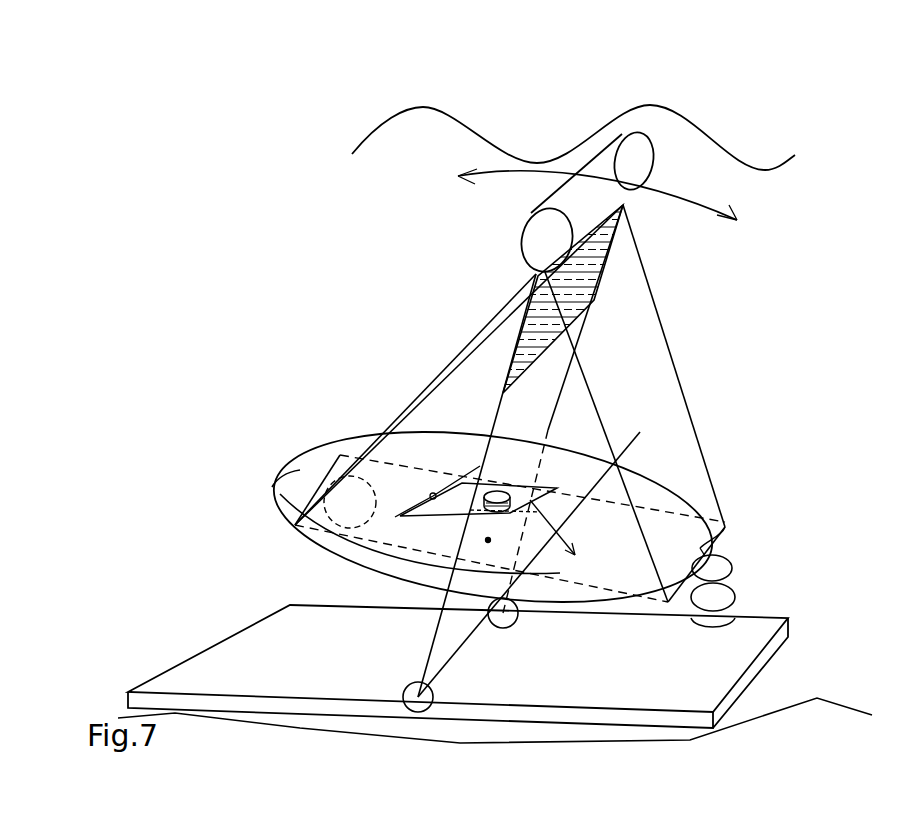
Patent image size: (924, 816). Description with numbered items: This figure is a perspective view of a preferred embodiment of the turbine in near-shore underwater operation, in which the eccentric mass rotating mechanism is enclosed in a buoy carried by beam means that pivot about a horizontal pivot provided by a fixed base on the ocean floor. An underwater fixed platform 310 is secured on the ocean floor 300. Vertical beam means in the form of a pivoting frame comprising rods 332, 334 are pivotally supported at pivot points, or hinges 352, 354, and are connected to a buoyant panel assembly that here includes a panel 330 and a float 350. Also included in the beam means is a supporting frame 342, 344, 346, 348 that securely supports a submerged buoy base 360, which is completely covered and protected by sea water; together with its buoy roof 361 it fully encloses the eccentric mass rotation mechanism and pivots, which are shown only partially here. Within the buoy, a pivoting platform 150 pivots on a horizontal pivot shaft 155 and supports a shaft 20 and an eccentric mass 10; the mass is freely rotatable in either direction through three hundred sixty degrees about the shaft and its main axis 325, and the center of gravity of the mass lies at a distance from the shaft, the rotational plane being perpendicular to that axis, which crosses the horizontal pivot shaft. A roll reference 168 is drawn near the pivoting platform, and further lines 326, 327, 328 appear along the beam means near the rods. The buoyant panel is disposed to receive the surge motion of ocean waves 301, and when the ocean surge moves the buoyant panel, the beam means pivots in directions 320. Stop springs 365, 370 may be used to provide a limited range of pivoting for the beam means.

The ocean waves 301 is at (716, 142).
The pivoting directions 320 is at (736, 212).
The float 350 is at (524, 231).
The panel 330 is at (572, 298).
The rod 334 is at (578, 355).
The main axis 325 is at (671, 353).
The beam edge line 326 is at (596, 402).
The beam edge line 327 is at (434, 390).
The rod 332 is at (500, 405).
The beam line 328 is at (433, 388).
The buoy roof 361 is at (602, 455).
The submerged buoy base 360 is at (282, 490).
The supporting frame 342 is at (383, 543).
The supporting frame 344 is at (322, 480).
The stop spring 370 is at (341, 534).
The supporting frame 346 is at (674, 522).
The supporting frame 348 is at (722, 533).
The stop spring 365 is at (738, 590).
The underwater fixed platform 310 is at (775, 618).
The ocean floor 300 is at (797, 700).
The hinge 352 is at (518, 620).
The hinge 354 is at (432, 697).
The eccentric mass 10 is at (538, 490).
The shaft 20 is at (511, 479).
The roll axis pivot 168 is at (437, 494).
The horizontal pivot shaft 155 is at (548, 506).
The pivoting platform 150 is at (574, 551).